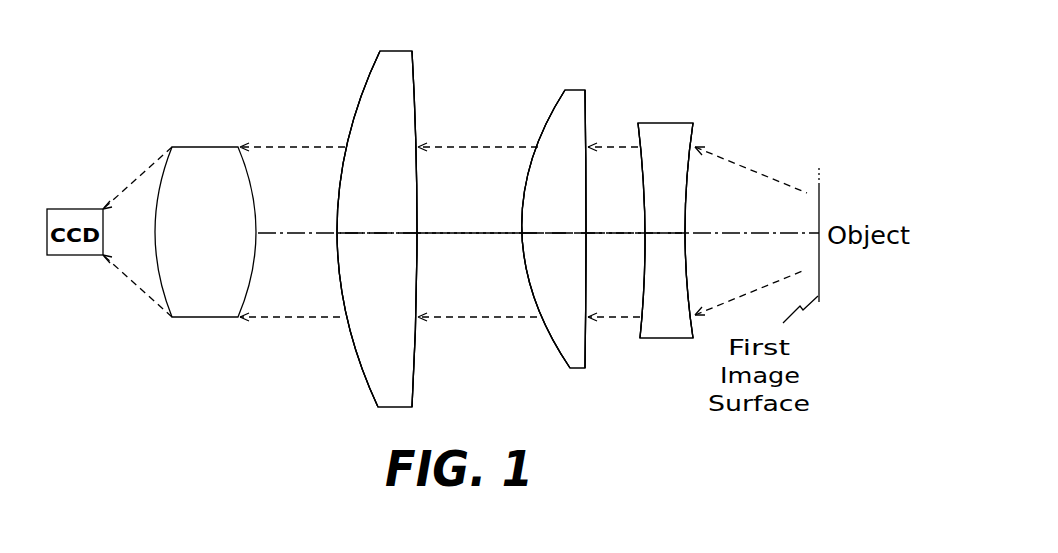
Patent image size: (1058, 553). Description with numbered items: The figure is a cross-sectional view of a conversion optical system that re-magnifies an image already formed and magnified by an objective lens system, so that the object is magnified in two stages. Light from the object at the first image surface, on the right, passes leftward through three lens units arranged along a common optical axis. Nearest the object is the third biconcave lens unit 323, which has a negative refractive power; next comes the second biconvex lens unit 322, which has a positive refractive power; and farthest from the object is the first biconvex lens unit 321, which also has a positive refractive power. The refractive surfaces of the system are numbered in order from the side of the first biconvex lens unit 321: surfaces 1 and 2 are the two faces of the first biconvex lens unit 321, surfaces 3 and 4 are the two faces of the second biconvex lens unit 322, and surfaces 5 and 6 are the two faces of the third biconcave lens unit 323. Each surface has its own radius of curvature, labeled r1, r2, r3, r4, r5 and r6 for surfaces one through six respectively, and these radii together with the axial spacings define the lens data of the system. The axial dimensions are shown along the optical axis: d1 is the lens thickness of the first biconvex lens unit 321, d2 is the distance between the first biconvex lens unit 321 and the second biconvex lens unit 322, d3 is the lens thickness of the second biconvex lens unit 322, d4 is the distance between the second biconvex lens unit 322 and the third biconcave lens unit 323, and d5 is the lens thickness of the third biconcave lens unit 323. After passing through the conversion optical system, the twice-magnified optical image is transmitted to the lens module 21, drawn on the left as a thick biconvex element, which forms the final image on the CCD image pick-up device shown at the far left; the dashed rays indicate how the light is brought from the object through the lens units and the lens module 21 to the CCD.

The lens module 21 is at (204, 147).
The first biconvex lens unit 321 is at (360, 18).
The second biconvex lens unit 322 is at (542, 45).
The third biconcave lens unit 323 is at (703, 85).
The refractive surface 1 is at (369, 382).
The refractive surface 2 is at (412, 393).
The refractive surface 3 is at (556, 345).
The refractive surface 4 is at (586, 355).
The refractive surface 5 is at (639, 334).
The refractive surface 6 is at (695, 328).
The radius of curvature r1 is at (370, 84).
The radius of curvature r2 is at (412, 73).
The radius of curvature r3 is at (552, 118).
The radius of curvature r4 is at (585, 108).
The radius of curvature r5 is at (652, 110).
The radius of curvature r6 is at (688, 122).
The lens thickness d1 is at (376, 235).
The distance between lenses d2 is at (476, 235).
The lens thickness d3 is at (556, 235).
The distance between lenses d4 is at (623, 235).
The lens thickness d5 is at (668, 235).